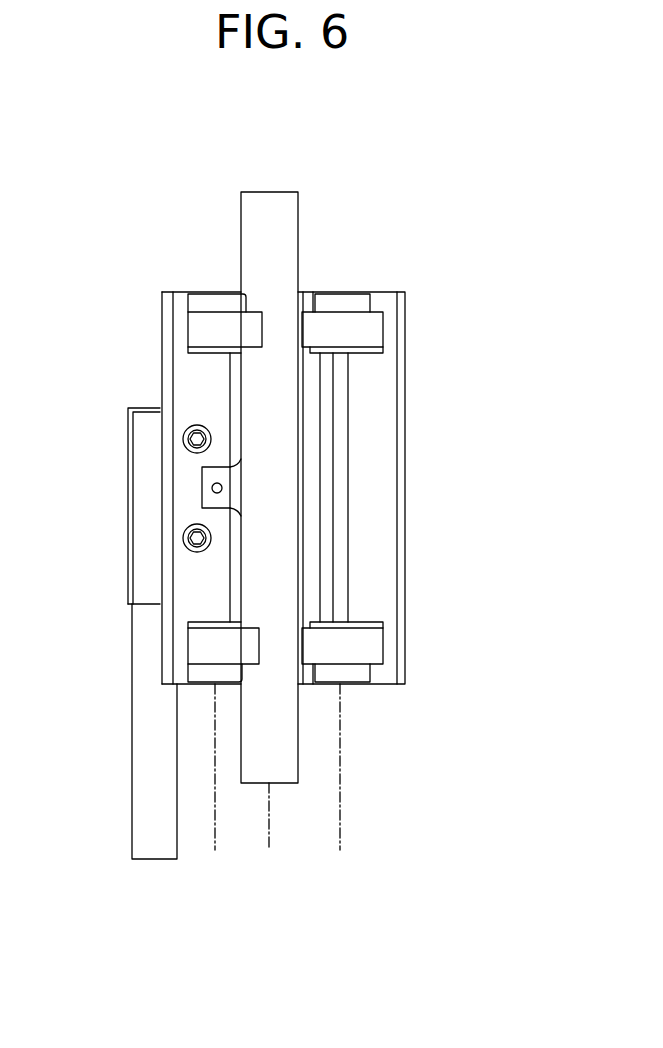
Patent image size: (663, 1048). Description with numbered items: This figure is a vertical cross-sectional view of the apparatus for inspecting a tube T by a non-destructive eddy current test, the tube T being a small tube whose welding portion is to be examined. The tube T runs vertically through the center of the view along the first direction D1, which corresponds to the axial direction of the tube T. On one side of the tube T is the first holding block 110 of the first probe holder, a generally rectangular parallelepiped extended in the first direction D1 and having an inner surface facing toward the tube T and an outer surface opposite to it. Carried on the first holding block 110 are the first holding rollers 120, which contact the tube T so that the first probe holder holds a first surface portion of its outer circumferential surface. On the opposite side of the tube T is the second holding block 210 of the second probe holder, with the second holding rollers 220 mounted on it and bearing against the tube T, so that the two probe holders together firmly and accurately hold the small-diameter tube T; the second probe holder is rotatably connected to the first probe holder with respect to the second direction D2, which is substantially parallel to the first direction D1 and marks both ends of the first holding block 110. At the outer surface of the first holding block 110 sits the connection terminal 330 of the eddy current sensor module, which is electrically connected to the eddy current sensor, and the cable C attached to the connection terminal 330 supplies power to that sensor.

The first holding block 110 is at (168, 368).
The first holding rollers 120 is at (210, 323).
The second holding block 210 is at (387, 485).
The second holding roller 220 is at (347, 323).
The connection terminal 330 is at (143, 483).
The tube T is at (268, 191).
The cable C is at (138, 797).
The first direction D1 is at (270, 832).
The second direction D2 is at (279, 783).